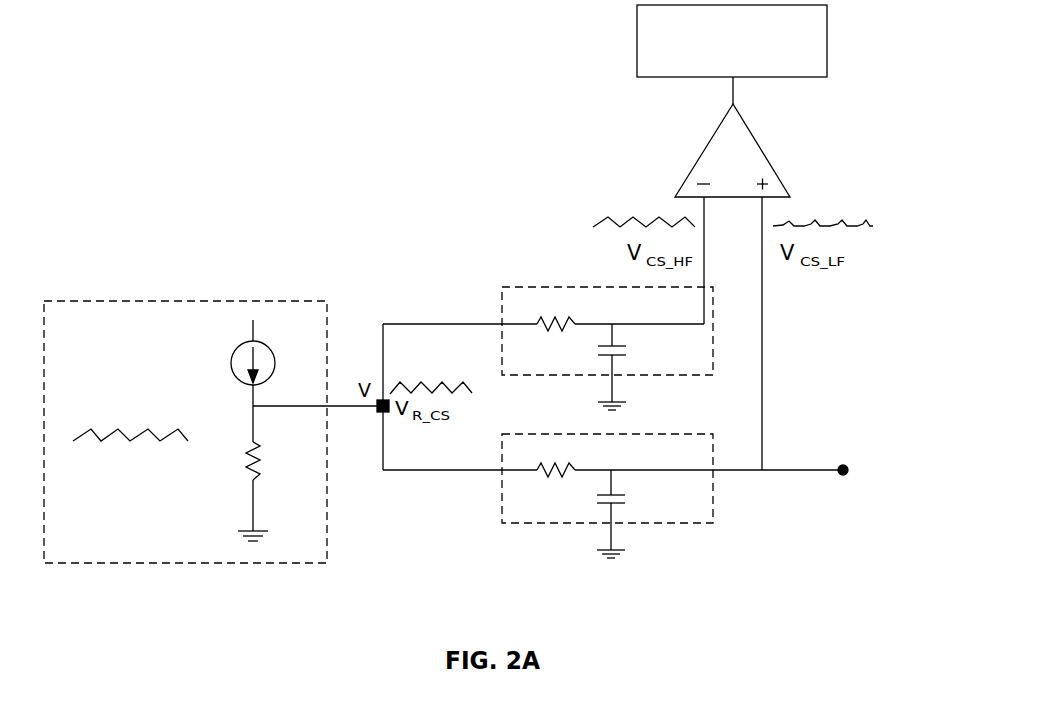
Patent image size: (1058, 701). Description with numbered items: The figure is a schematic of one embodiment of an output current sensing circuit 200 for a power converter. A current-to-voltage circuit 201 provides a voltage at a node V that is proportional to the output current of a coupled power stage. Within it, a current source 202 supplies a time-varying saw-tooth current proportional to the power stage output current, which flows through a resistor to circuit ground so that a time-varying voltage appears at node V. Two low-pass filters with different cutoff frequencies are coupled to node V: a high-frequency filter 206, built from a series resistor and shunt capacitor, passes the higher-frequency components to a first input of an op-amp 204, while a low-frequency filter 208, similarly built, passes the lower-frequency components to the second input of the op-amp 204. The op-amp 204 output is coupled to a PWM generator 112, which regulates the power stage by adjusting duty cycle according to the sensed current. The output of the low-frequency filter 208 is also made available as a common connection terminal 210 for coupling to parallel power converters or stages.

The output current sensing circuit 200 is at (176, 34).
The PWM generator 112 is at (827, 40).
The op-amp 204 is at (755, 135).
The current-to-voltage circuit 201 is at (185, 403).
The current source 202 is at (231, 363).
The high-frequency filter 206 is at (502, 287).
The low-frequency filter 208 is at (502, 523).
The common connection terminal 210 is at (845, 462).